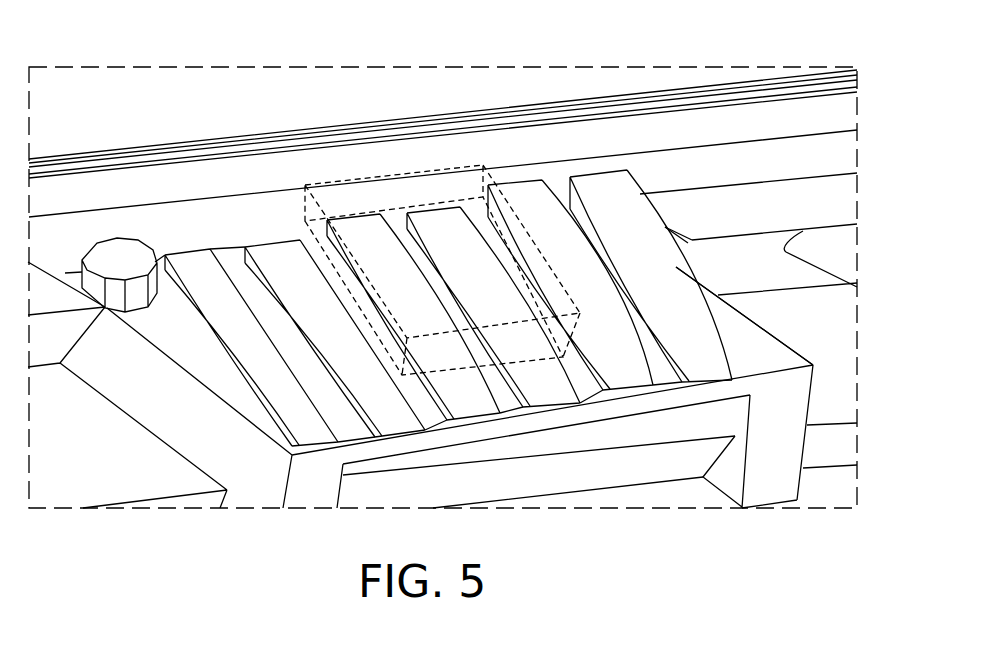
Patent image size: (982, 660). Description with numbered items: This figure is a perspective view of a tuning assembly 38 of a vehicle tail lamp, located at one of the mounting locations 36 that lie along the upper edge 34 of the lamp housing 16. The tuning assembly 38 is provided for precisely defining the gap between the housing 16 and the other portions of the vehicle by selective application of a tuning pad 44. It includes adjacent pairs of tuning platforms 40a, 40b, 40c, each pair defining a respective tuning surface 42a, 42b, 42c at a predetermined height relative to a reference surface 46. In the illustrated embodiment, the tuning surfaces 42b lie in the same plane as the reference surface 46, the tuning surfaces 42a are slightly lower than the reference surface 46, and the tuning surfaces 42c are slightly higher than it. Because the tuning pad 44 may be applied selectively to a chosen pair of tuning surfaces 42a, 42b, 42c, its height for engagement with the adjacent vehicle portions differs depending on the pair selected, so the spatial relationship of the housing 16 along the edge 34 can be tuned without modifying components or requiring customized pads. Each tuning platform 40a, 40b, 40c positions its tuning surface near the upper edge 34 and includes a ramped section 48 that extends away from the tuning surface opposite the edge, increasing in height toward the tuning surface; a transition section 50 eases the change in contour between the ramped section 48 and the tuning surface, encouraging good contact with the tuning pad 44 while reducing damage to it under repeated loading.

The housing 16 is at (838, 208).
The upper edge 34 is at (302, 150).
The mounting locations 36 is at (776, 343).
The tuning assembly 38 is at (168, 185).
The tuning platforms 40a is at (325, 383).
The tuning platforms 40b is at (481, 432).
The tuning platforms 40c is at (698, 266).
The tuning surfaces 42a is at (277, 245).
The tuning surfaces 42b is at (443, 232).
The tuning surfaces 42c is at (617, 200).
The tuning pad 44 is at (489, 163).
The reference surface 46 is at (125, 266).
The ramped section 48 is at (700, 315).
The transition section 50 is at (648, 200).